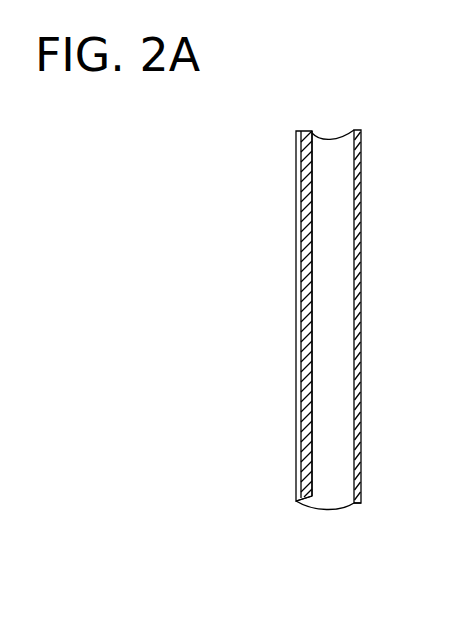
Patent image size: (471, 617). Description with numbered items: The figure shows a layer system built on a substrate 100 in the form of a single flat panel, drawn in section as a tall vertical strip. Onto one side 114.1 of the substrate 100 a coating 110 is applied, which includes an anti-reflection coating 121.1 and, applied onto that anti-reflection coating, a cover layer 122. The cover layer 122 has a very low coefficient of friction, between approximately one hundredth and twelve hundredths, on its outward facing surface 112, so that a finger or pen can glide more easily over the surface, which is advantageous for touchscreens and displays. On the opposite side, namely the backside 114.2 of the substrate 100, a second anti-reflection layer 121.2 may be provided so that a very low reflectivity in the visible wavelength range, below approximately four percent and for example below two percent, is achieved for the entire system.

The substrate 100 is at (340, 150).
The coating 110 is at (296, 115).
The outward facing surface 112 is at (298, 207).
The cover layer 122 is at (299, 288).
The anti-reflection coating 121.1 is at (300, 372).
The second anti-reflection layer 121.2 is at (361, 224).
The one side 114.1 is at (310, 496).
The backside 114.2 is at (356, 504).